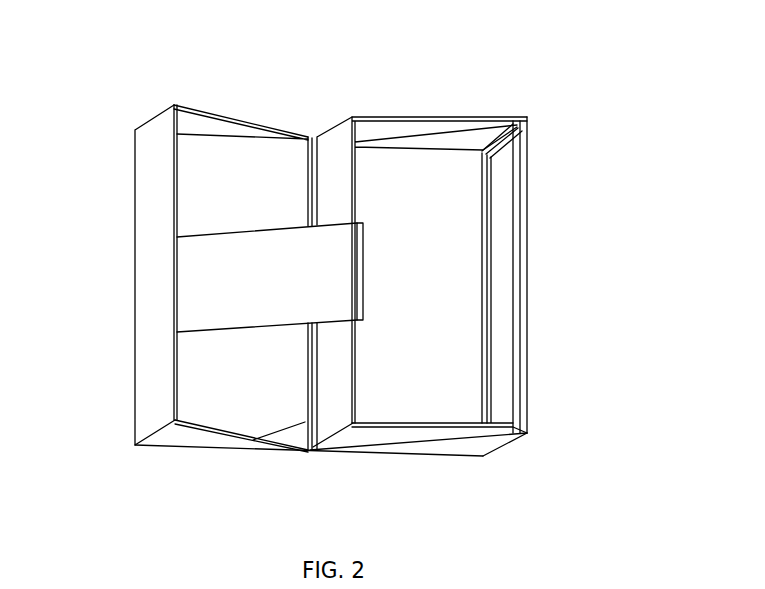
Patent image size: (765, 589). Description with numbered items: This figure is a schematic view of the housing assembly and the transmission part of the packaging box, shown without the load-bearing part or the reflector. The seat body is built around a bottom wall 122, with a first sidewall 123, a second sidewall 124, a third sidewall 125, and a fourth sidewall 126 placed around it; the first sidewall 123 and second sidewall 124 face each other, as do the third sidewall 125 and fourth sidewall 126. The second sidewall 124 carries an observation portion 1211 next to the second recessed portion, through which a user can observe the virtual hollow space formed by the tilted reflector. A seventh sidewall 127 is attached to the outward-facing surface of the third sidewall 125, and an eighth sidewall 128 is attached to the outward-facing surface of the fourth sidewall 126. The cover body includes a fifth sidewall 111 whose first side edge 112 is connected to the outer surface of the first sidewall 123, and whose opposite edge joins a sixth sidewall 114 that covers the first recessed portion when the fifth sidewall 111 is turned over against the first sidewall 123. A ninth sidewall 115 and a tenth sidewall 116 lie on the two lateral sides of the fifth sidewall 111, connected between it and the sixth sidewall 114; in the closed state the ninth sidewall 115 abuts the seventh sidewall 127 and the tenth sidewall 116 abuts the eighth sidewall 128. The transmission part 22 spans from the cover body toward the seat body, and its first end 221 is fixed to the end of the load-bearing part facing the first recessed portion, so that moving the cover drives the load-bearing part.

The transmission part 22 is at (190, 275).
The first end 221 is at (353, 318).
The fifth sidewall 111 is at (207, 375).
The first side edge 112 is at (253, 440).
The sixth sidewall 114 is at (158, 138).
The ninth sidewall 115 is at (180, 447).
The tenth sidewall 116 is at (227, 132).
The bottom wall 122 is at (473, 343).
The first sidewall 123 is at (324, 138).
The second sidewall 124 is at (525, 263).
The third sidewall 125 is at (397, 447).
The fourth sidewall 126 is at (383, 128).
The seventh sidewall 127 is at (482, 448).
The eighth sidewall 128 is at (512, 118).
The observation portion 1211 is at (507, 212).